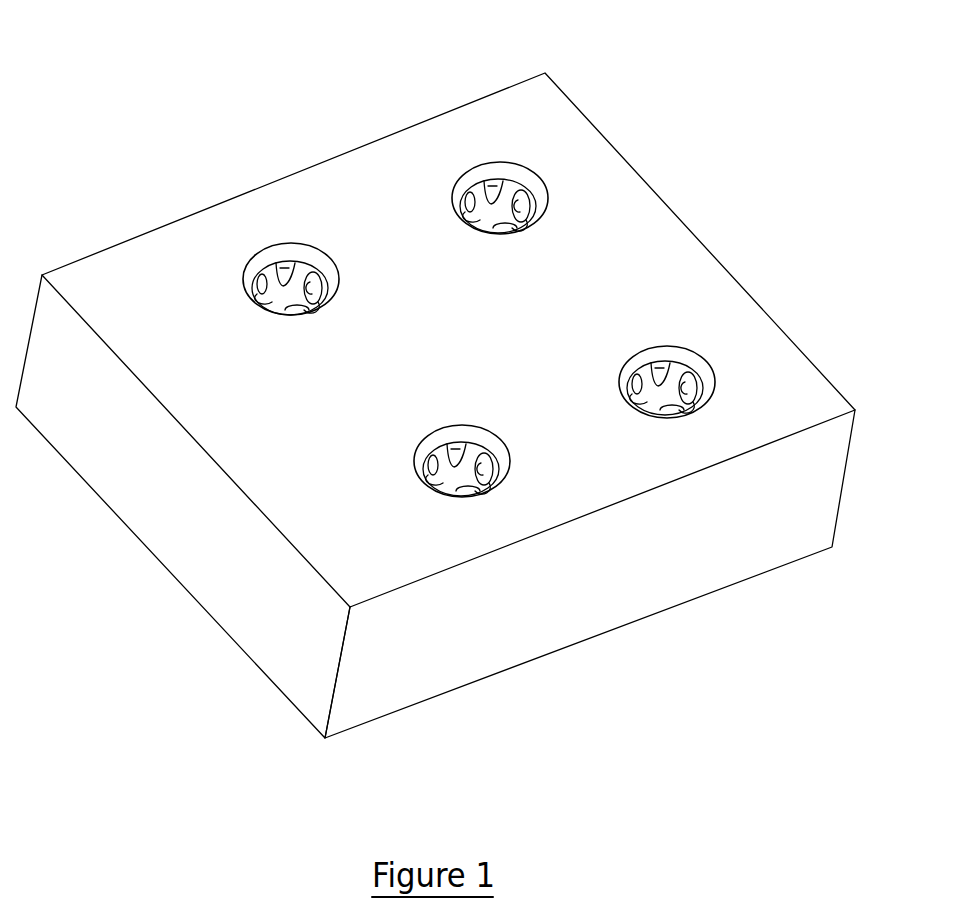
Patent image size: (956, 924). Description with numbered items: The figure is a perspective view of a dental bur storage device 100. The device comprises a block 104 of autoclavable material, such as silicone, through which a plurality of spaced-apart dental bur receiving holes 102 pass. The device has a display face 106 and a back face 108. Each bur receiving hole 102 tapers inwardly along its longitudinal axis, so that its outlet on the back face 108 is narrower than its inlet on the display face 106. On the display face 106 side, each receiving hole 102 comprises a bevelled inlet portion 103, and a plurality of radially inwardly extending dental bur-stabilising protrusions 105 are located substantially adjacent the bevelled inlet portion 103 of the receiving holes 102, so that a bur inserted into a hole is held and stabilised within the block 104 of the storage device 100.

The dental bur storage device 100 is at (435, 380).
The dental bur receiving holes 102 is at (433, 370).
The bevelled inlet portion 103 is at (208, 188).
The block 104 is at (203, 578).
The dental bur-stabilising protrusions 105 is at (208, 188).
The display face 106 is at (462, 125).
The back face 108 is at (708, 597).